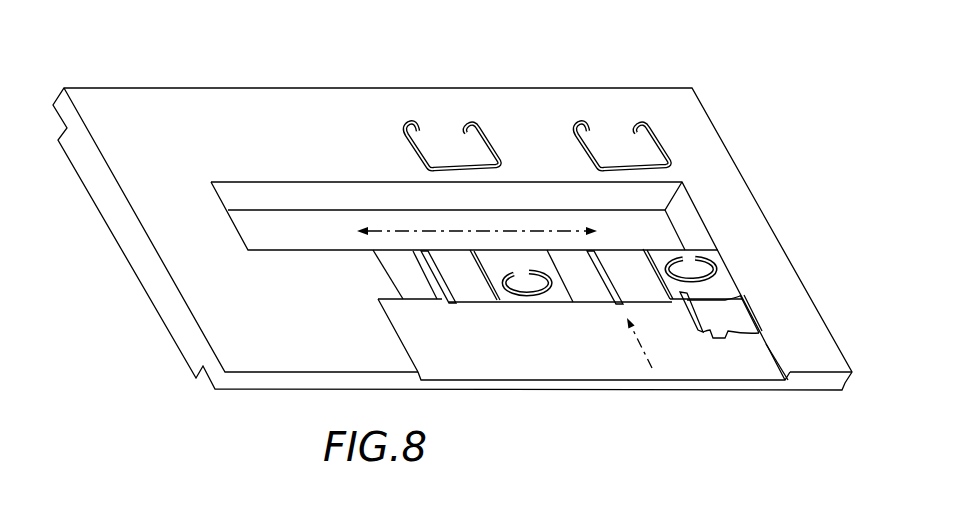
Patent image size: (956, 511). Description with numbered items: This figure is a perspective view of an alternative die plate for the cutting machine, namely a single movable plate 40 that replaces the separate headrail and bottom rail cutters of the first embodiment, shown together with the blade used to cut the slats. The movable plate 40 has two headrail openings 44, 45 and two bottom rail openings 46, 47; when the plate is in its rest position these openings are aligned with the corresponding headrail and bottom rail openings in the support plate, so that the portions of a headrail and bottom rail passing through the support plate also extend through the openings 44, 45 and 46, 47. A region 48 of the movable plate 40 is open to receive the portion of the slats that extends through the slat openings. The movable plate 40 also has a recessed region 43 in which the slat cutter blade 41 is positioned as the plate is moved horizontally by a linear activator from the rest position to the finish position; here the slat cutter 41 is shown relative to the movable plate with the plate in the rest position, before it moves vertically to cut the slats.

The movable plate 40 is at (212, 64).
The slat cutter blade 41 is at (732, 316).
The recessed region 43 is at (682, 363).
The headrail opening 44 is at (405, 141).
The headrail opening 45 is at (577, 141).
The bottom rail opening 46 is at (532, 296).
The bottom rail opening 47 is at (715, 267).
The open region 48 is at (657, 232).